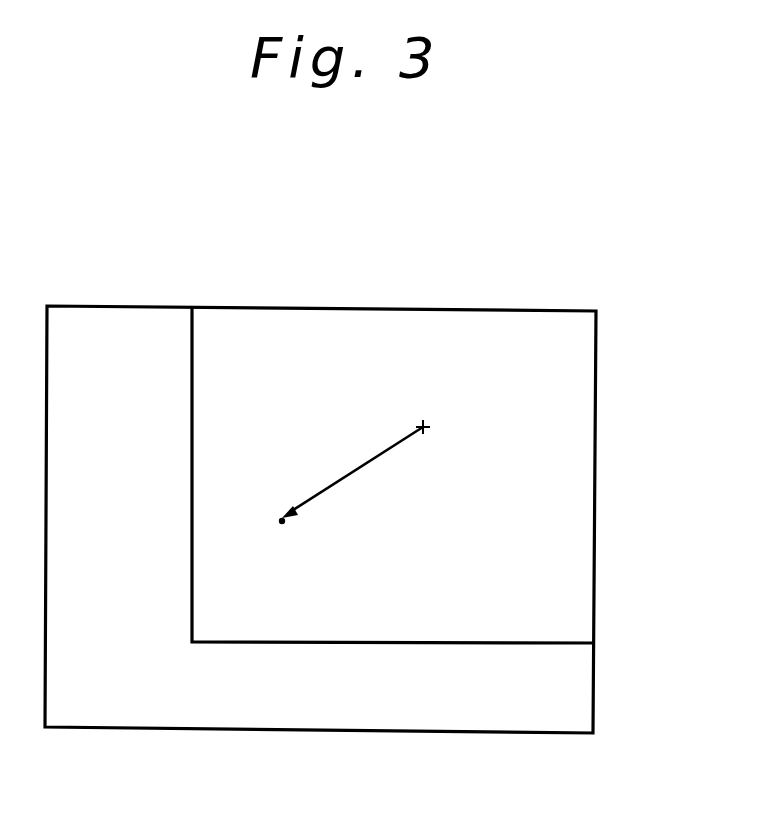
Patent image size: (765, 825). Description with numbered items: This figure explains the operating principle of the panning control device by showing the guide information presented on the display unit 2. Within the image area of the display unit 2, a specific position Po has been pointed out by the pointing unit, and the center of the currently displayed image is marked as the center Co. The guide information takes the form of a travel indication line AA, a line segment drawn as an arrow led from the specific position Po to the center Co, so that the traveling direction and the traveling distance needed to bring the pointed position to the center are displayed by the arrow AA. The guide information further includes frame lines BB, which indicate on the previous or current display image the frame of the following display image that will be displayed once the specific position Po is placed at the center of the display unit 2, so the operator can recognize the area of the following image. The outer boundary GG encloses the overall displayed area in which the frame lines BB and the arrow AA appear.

The display unit 2 is at (604, 326).
The specific position Po is at (428, 421).
The center of the display image Co is at (281, 518).
The travel indication line AA is at (363, 469).
The frame lines BB is at (446, 641).
The background screen area GG is at (148, 715).